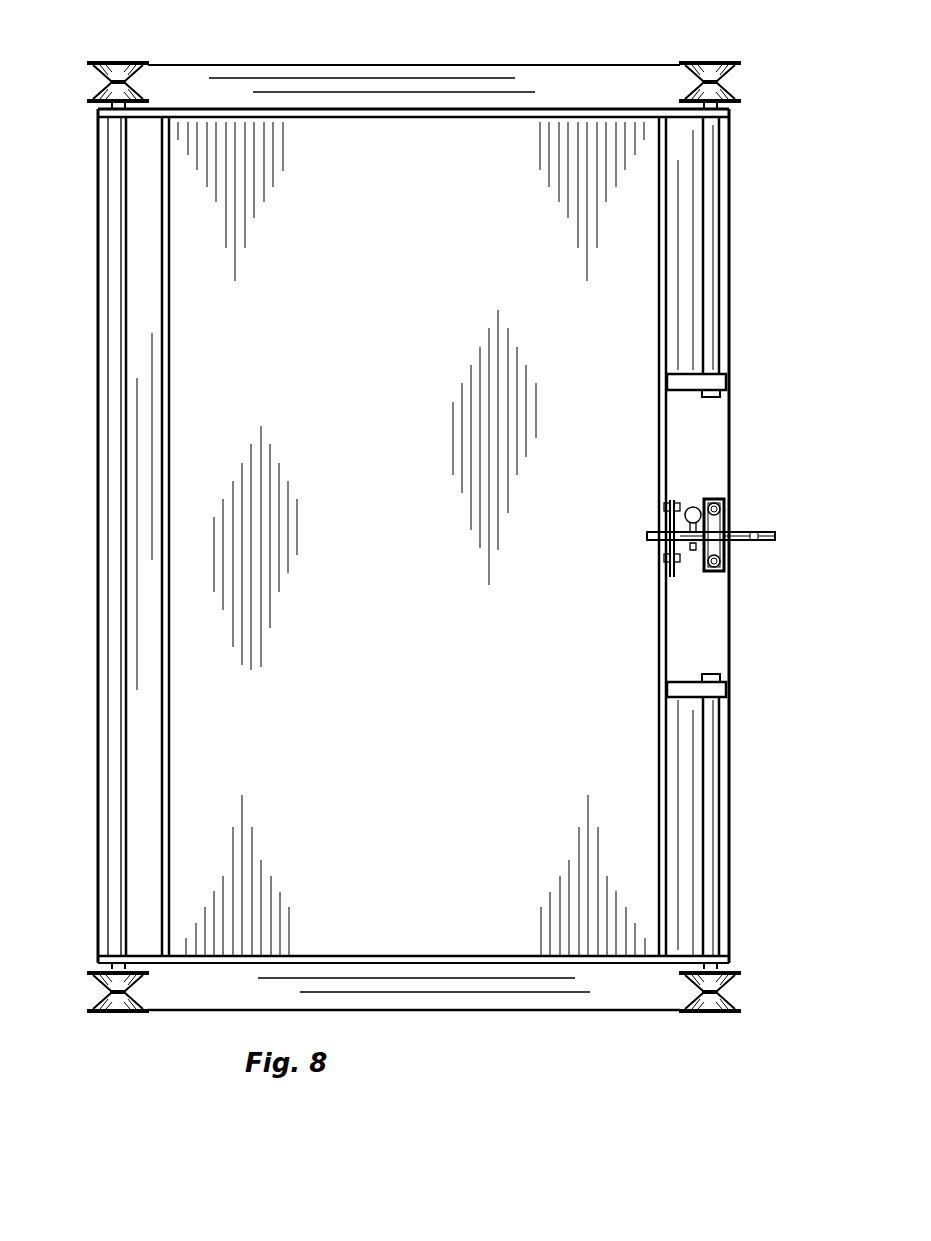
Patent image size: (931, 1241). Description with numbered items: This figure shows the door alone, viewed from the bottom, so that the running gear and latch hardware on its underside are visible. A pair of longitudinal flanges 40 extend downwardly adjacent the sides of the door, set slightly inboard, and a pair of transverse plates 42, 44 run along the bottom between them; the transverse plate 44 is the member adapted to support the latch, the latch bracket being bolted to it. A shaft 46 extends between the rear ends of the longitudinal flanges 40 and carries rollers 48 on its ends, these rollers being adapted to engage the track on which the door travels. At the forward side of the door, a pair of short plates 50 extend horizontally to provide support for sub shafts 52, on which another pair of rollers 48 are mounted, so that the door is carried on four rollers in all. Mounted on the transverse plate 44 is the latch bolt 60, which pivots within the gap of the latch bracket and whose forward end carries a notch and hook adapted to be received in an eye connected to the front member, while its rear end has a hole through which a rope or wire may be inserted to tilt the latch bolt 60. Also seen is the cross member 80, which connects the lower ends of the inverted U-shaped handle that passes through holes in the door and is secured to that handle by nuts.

The longitudinal flanges 40 is at (375, 109).
The transverse plate 42 is at (170, 330).
The transverse plate 44 is at (663, 428).
The shaft 46 is at (114, 347).
The rollers 48 is at (112, 78).
The short plates 50 is at (725, 382).
The sub shafts 52 is at (712, 210).
The latch bolt 60 is at (745, 531).
The cross member 80 is at (722, 556).